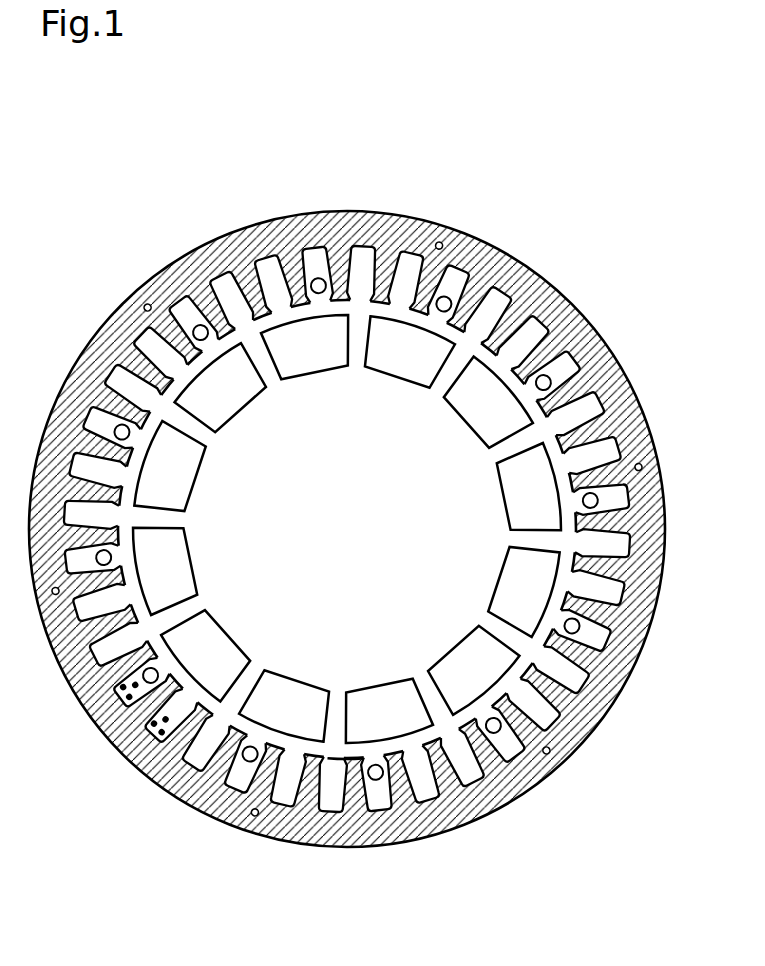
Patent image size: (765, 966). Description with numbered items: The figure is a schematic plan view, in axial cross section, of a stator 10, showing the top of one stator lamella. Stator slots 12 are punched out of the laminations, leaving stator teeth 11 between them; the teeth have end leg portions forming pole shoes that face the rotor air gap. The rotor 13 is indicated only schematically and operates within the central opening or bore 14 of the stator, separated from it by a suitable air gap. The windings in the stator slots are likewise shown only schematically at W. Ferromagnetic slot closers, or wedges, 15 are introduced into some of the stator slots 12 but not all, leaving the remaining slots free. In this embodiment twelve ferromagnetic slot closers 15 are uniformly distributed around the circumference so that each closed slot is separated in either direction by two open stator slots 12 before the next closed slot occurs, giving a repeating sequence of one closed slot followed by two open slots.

The stator 10 is at (482, 250).
The stator teeth 11 is at (514, 318).
The stator slots 12 is at (183, 306).
The rotor 13 is at (517, 497).
The central opening or bore 14 is at (353, 757).
The ferromagnetic slot closers 15 is at (438, 308).
The windings W is at (106, 739).